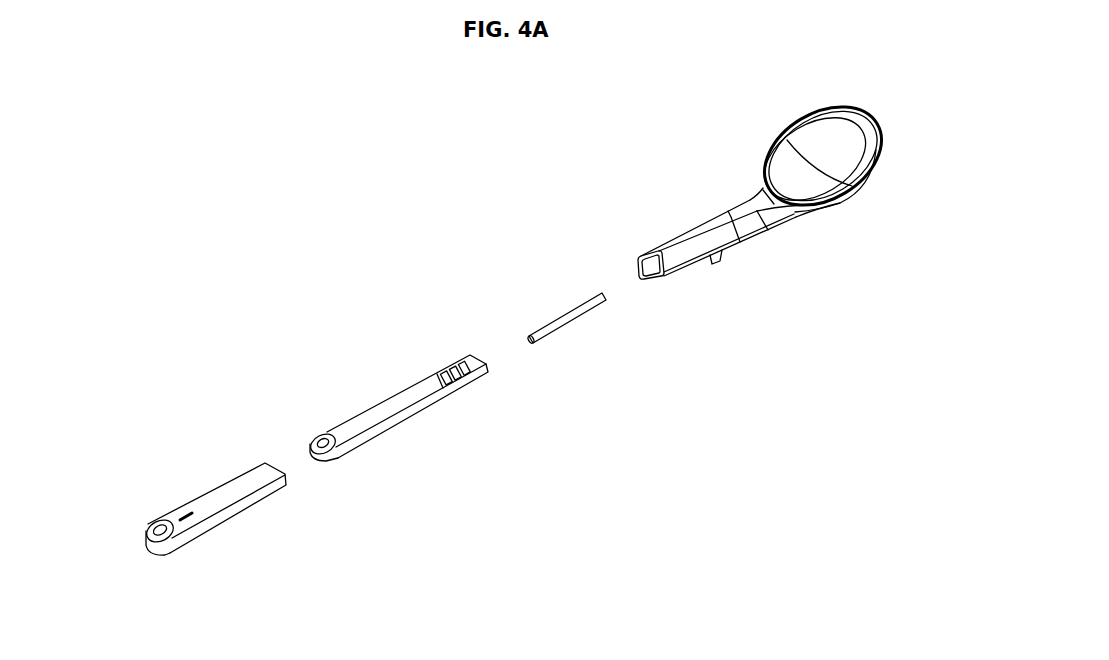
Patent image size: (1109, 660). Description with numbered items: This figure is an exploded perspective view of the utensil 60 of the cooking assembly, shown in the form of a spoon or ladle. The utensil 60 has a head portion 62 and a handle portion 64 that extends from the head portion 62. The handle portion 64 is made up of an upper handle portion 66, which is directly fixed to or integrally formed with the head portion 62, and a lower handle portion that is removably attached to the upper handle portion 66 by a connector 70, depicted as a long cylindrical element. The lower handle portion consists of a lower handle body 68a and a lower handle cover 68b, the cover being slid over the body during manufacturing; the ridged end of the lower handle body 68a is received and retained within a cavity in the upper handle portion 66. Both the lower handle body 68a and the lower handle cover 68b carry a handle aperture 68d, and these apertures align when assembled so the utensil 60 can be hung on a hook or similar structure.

The utensil 60 is at (313, 223).
The head portion 62 is at (930, 175).
The handle portion 64 is at (769, 250).
The upper handle portion 66 is at (686, 237).
The lower handle body 68a is at (422, 403).
The lower handle cover 68b is at (212, 518).
The handle aperture 68d is at (320, 437).
The connector 70 is at (577, 307).